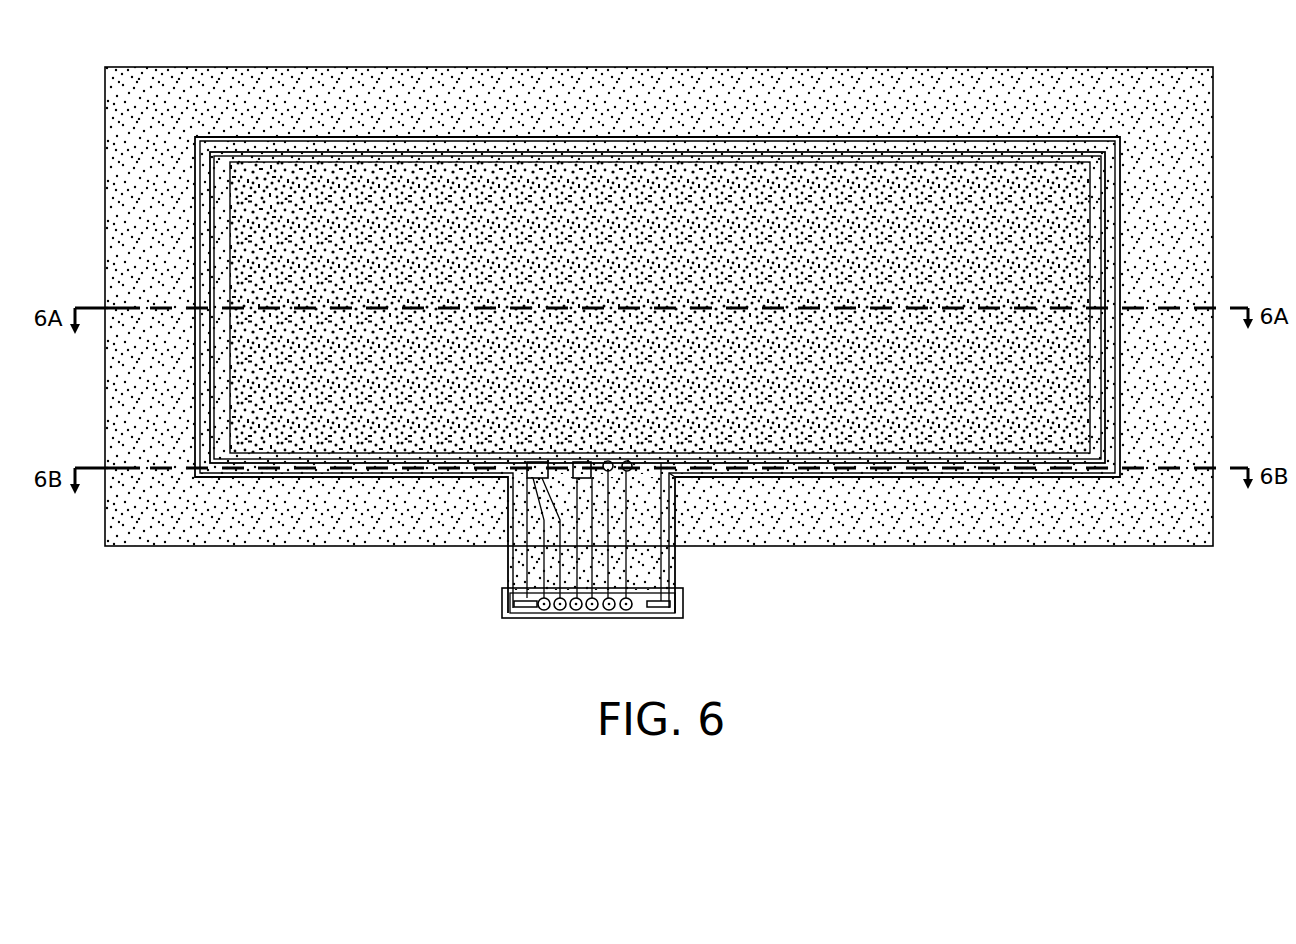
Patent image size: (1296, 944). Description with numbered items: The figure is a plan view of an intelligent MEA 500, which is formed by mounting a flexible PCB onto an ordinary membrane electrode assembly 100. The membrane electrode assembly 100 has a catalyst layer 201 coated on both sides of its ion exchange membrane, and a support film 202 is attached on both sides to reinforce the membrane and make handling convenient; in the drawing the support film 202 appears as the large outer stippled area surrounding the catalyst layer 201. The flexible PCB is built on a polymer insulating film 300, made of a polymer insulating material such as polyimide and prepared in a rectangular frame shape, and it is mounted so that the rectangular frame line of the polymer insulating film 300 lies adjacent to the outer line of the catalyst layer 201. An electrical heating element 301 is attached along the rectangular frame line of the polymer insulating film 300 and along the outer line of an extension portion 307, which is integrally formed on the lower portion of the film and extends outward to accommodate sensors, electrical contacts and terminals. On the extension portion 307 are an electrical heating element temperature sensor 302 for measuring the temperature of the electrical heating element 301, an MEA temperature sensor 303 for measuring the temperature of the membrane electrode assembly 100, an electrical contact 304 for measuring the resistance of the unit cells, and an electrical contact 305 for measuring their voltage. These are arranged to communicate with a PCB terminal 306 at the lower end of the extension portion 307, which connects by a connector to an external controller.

The intelligent MEA 500 is at (575, 37).
The membrane electrode assembly 100 is at (1217, 154).
The support film 202 is at (613, 113).
The catalyst layer 201 is at (613, 212).
The polymer insulating film 300 is at (1121, 218).
The electrical heating element 301 is at (1108, 260).
The electrical heating element temperature sensor 302 is at (527, 468).
The MEA temperature sensor 303 is at (580, 473).
The electrical contact for measuring resistance 304 is at (677, 476).
The electrical contact for measuring voltage 305 is at (631, 469).
The PCB terminal 306 is at (640, 618).
The extension portion 307 is at (677, 570).